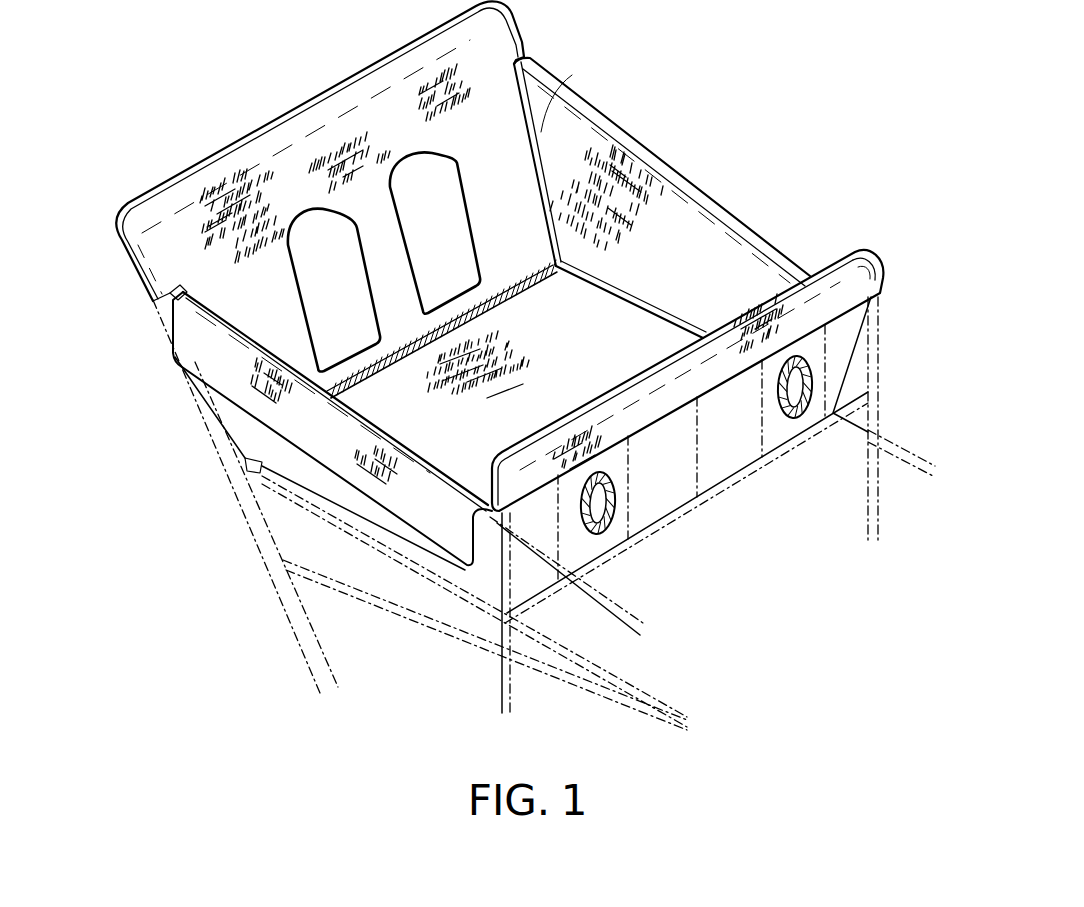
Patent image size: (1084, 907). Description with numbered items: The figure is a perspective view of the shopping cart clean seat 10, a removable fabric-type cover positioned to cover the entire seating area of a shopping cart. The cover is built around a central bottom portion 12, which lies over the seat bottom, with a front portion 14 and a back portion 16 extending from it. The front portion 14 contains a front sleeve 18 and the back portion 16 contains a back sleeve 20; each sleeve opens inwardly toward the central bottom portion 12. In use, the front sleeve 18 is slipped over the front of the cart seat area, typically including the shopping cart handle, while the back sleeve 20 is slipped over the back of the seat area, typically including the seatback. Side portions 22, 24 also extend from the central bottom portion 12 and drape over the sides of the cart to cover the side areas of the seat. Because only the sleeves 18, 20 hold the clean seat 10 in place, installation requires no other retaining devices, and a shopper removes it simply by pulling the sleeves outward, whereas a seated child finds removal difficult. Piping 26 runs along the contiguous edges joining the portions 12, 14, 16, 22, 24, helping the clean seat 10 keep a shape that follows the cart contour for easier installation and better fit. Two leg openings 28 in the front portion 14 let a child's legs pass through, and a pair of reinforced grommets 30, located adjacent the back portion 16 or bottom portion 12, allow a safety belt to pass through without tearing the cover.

The shopping cart clean seat 10 is at (705, 130).
The central bottom portion 12 is at (569, 342).
The front portion 14 is at (364, 120).
The back portion 16 is at (676, 390).
The front sleeve 18 is at (300, 104).
The back sleeve 20 is at (886, 281).
The side portion 22 is at (679, 262).
The side portion 24 is at (306, 440).
The piping 26 is at (541, 132).
The leg openings 28 is at (319, 297).
The grommets 30 is at (606, 530).